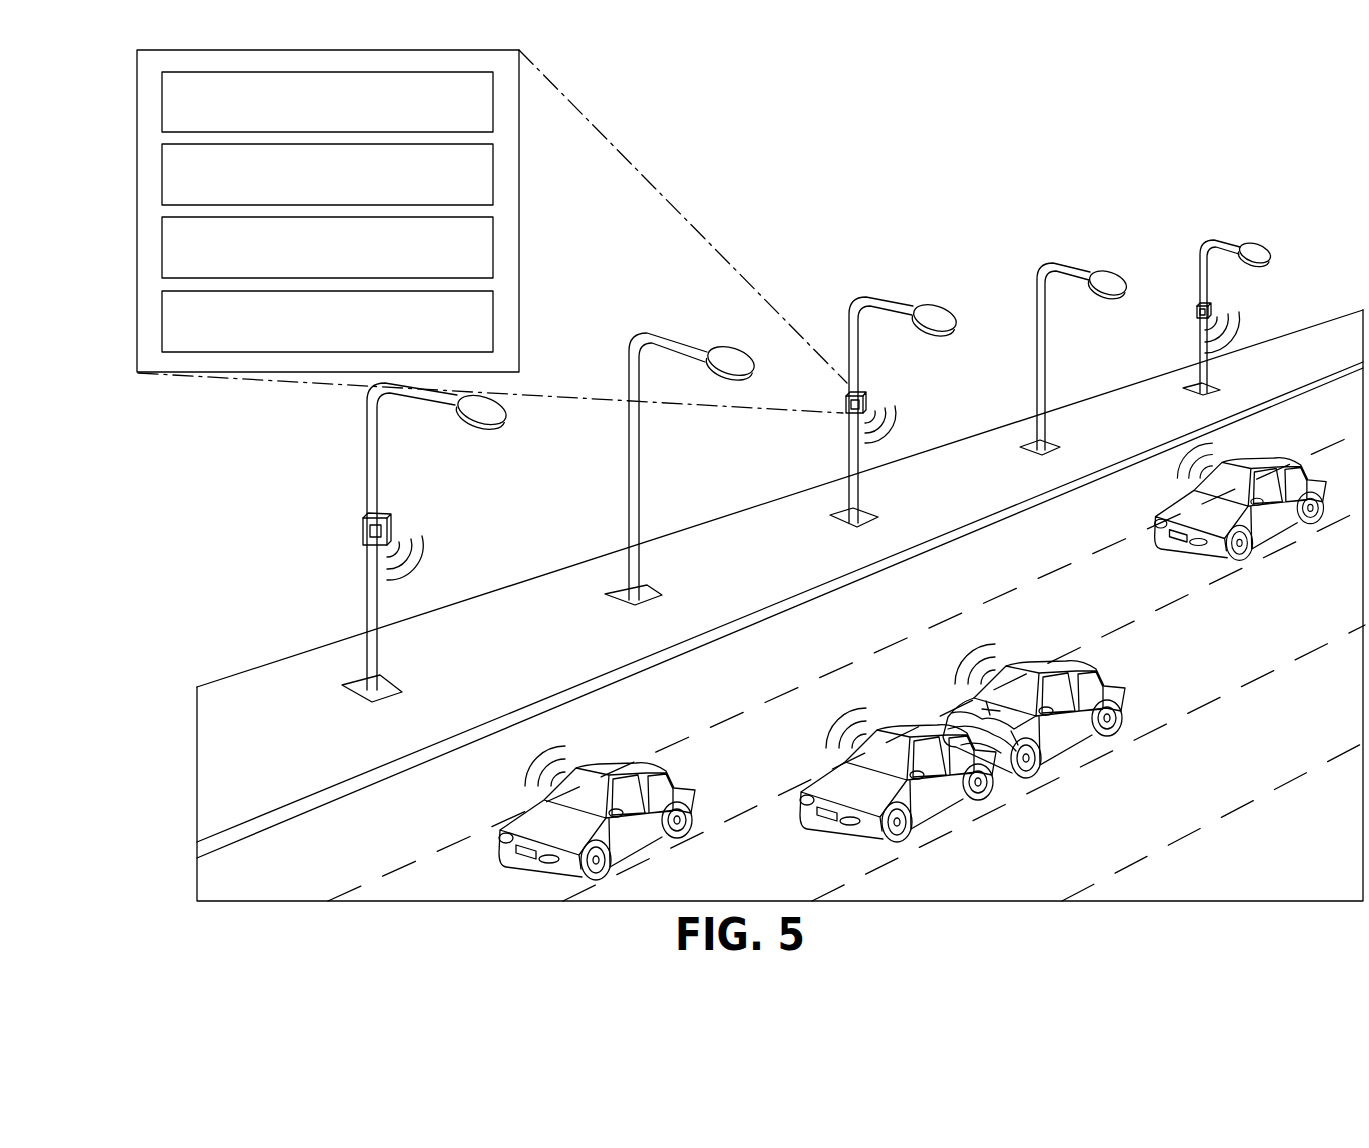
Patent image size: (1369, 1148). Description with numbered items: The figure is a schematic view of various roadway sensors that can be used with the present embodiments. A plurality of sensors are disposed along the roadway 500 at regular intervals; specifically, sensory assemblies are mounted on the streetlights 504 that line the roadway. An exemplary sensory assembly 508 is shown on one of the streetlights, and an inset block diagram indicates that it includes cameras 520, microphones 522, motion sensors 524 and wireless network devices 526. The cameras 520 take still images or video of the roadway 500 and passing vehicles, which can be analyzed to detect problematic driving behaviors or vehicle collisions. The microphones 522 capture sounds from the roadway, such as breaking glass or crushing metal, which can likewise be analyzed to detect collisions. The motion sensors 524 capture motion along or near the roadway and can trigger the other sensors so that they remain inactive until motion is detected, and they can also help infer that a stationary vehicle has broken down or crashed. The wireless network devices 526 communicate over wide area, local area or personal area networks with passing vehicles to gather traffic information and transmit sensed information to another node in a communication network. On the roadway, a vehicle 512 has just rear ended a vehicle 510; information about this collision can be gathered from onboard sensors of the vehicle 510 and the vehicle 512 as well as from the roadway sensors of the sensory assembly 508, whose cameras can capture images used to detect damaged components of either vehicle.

The roadway 500 is at (823, 630).
The streetlights 504 is at (893, 252).
The sensory assembly 508 is at (867, 400).
The vehicle 510 is at (913, 730).
The vehicle 512 is at (1027, 667).
The cameras 520 is at (162, 102).
The microphones 522 is at (162, 166).
The motion sensors 524 is at (162, 250).
The wireless network devices 526 is at (162, 315).